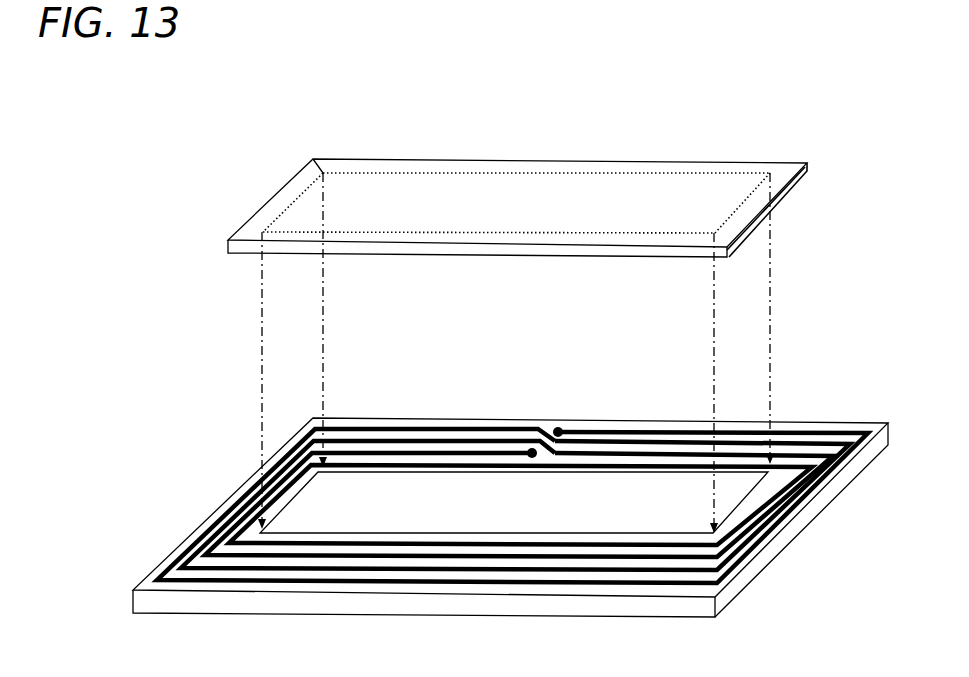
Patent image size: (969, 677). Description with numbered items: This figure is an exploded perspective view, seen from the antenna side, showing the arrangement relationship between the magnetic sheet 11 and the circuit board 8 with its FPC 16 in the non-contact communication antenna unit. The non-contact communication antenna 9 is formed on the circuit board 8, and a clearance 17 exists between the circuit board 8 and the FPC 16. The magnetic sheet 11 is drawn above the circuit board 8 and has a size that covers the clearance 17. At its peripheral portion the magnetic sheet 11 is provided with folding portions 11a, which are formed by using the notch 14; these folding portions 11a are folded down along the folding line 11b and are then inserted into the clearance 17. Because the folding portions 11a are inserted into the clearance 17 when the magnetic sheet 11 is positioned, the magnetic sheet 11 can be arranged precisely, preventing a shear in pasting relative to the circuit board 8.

The non-contact communication circuit board 8 is at (517, 503).
The non-contact communication antenna 9 is at (834, 428).
The magnetic sheet 11 is at (540, 196).
The folding portions 11a is at (450, 168).
The folding line 11b is at (643, 175).
The notch 14 is at (788, 167).
The FPC 16 is at (789, 428).
The clearance 17 is at (238, 497).